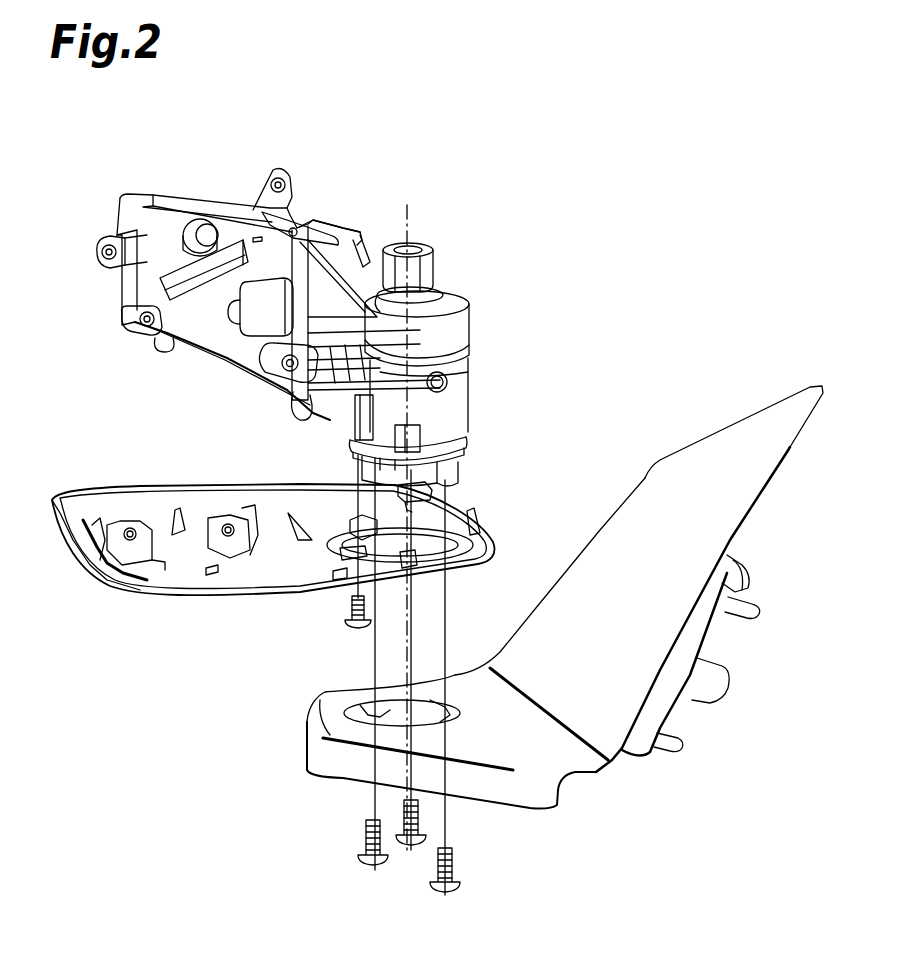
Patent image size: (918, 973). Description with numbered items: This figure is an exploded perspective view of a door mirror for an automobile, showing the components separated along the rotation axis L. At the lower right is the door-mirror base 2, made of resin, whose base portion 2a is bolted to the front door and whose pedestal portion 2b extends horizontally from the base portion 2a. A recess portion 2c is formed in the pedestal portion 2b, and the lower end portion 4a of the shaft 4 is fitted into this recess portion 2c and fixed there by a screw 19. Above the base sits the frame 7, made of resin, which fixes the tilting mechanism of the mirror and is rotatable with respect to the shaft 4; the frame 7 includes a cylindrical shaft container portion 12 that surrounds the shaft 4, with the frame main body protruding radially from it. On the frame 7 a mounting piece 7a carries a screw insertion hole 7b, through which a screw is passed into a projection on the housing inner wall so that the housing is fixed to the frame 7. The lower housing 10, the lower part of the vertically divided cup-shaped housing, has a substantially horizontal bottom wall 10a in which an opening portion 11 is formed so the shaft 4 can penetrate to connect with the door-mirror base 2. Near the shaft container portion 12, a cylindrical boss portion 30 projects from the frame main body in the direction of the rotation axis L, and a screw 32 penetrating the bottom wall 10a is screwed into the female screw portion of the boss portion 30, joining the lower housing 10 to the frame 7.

The door-mirror base 2 is at (653, 463).
The base portion 2a is at (608, 573).
The pedestal portion 2b is at (500, 745).
The recess portion 2c is at (430, 700).
The shaft 4 is at (430, 270).
The lower end portion 4a is at (462, 460).
The frame 7 is at (210, 340).
The mounting piece 7a is at (292, 195).
The screw insertion hole 7b is at (272, 172).
The lower housing 10 is at (75, 545).
The bottom wall 10a is at (270, 568).
The opening portion 11 is at (435, 552).
The shaft container portion 12 is at (456, 340).
The screw 19 is at (365, 862).
The boss portion 30 is at (345, 432).
The screw 32 is at (355, 618).
The rotation axis L is at (412, 232).